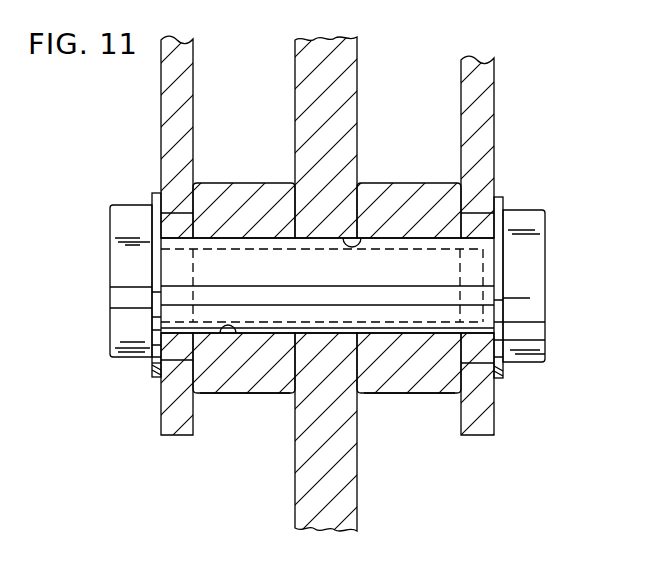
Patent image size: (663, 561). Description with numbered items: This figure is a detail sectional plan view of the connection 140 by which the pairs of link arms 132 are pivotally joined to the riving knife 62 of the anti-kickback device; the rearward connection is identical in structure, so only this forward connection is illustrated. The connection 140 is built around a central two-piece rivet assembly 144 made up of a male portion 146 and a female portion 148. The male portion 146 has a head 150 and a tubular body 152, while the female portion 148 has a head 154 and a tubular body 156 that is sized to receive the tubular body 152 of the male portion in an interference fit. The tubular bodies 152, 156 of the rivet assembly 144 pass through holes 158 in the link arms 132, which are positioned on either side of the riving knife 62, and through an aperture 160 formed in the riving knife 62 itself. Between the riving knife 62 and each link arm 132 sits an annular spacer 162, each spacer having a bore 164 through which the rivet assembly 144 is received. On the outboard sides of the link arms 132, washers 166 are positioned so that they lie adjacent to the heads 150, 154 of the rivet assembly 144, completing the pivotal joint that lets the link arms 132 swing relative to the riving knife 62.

The first link arm 132 is at (190, 74).
The riving knife 62 is at (352, 78).
The forward connection 140 is at (514, 131).
The tubular body 152 is at (232, 205).
The tubular body 156 is at (408, 237).
The annular spacer 162 is at (262, 395).
The rivet assembly 144 is at (413, 318).
The aperture 160 is at (363, 237).
The bore 164 is at (229, 335).
The head 150 is at (120, 226).
The head 154 is at (535, 261).
The hole 158 is at (162, 220).
The male portion 146 is at (123, 330).
The female portion 148 is at (522, 370).
The washer 166 is at (150, 367).